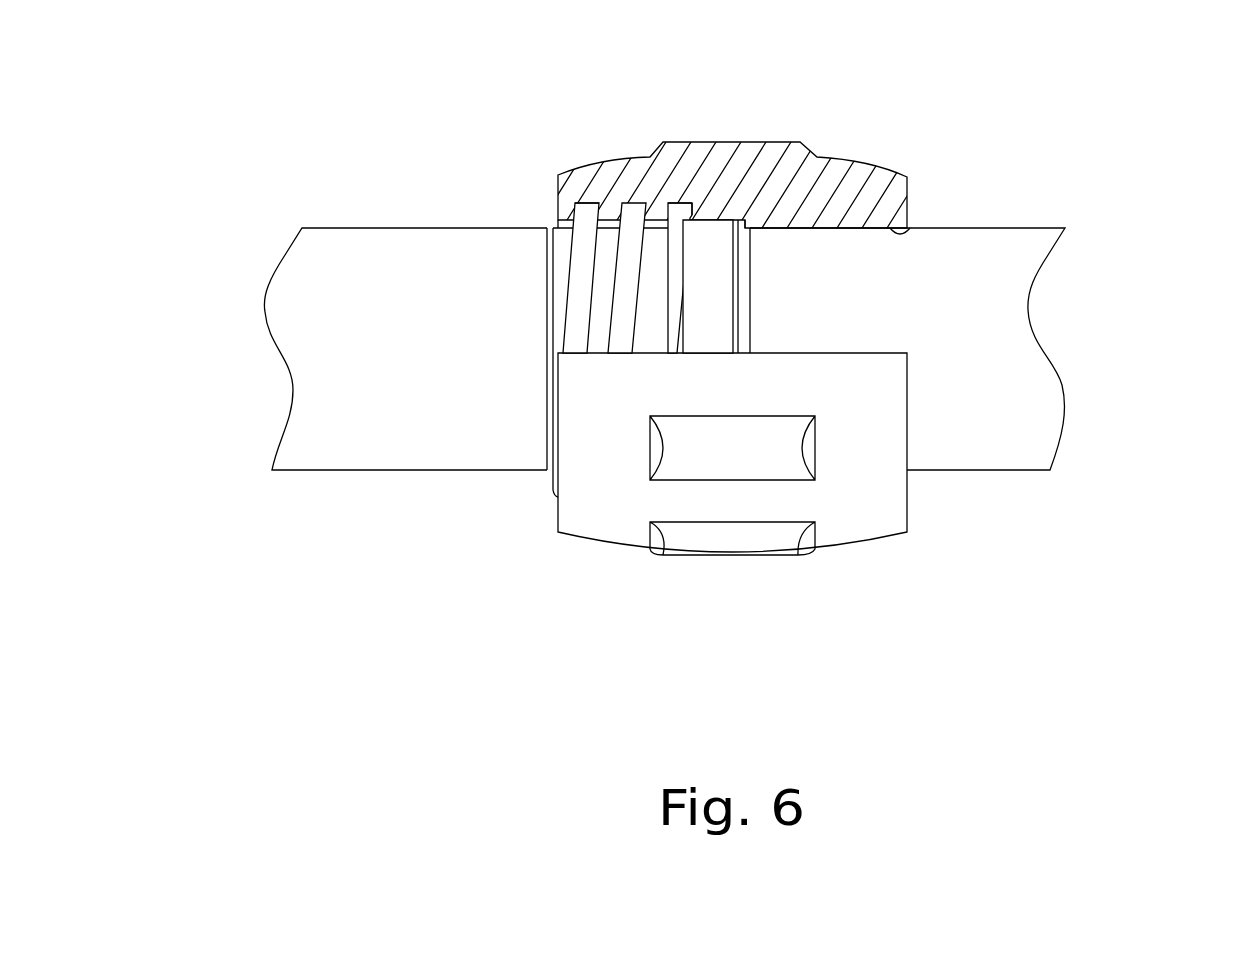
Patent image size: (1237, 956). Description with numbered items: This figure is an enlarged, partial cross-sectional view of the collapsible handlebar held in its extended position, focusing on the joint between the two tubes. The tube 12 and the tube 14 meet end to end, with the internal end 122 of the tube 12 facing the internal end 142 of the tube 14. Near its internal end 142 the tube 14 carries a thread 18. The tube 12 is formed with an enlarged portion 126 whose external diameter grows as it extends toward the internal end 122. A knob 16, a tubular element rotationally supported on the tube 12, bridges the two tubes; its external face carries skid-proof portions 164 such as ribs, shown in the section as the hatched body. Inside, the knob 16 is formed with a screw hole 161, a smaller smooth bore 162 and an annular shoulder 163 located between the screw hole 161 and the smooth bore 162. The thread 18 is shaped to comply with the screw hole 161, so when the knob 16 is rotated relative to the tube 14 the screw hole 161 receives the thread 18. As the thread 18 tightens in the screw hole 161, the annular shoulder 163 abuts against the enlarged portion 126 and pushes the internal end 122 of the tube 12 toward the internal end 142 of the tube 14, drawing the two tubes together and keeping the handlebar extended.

The tube 12 is at (1028, 379).
The tube 14 is at (342, 252).
The knob 16 is at (887, 188).
The thread 18 is at (577, 307).
The internal end 122 is at (683, 225).
The enlarged portion 126 is at (707, 303).
The internal end 142 is at (666, 228).
The screw hole 161 is at (573, 210).
The smooth bore 162 is at (920, 227).
The annular shoulder 163 is at (736, 226).
The skid-proof portions 164 is at (727, 538).